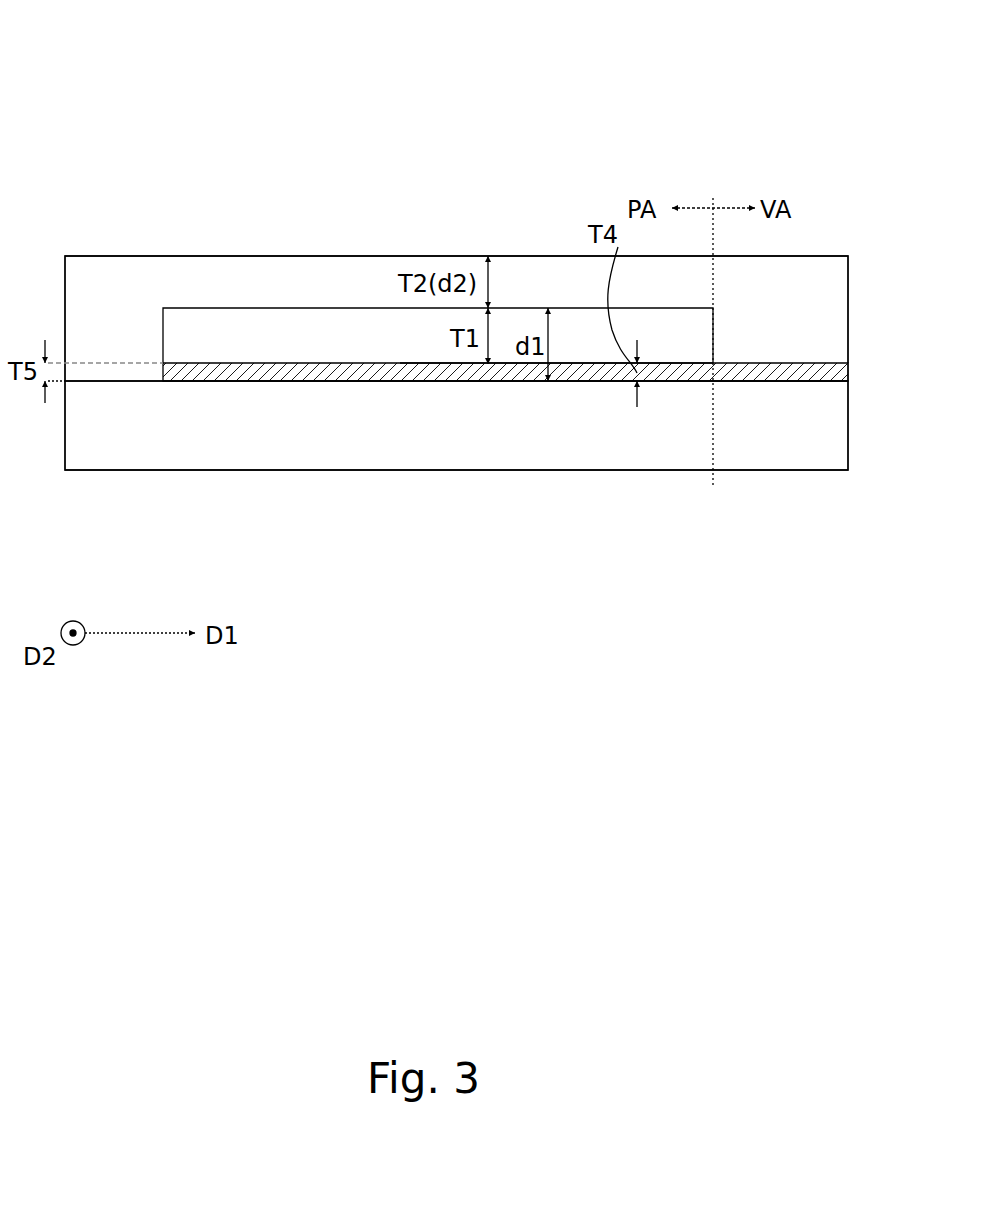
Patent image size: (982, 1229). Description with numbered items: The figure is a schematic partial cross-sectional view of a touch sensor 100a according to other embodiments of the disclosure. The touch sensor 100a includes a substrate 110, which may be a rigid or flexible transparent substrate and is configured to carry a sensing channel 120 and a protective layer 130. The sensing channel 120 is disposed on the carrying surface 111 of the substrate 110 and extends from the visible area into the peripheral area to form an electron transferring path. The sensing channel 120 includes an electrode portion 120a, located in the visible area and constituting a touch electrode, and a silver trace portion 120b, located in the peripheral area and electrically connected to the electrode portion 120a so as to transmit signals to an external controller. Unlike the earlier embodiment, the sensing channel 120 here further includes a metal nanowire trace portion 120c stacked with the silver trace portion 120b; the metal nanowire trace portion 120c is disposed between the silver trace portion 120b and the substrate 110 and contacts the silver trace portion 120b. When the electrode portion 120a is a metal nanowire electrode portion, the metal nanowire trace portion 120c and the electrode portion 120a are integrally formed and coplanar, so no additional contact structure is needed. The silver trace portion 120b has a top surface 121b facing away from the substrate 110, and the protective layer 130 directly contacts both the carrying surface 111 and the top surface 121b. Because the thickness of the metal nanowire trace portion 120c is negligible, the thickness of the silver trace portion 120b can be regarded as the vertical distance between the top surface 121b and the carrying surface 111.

The touch sensor 100a is at (885, 46).
The substrate 110 is at (840, 428).
The carrying surface 111 is at (205, 383).
The sensing channel 120 is at (777, 525).
The electrode portion 120a is at (733, 382).
The silver trace portion 120b is at (668, 347).
The metal nanowire trace portion 120c is at (567, 382).
The top surface 121b is at (352, 312).
The protective layer 130 is at (840, 314).